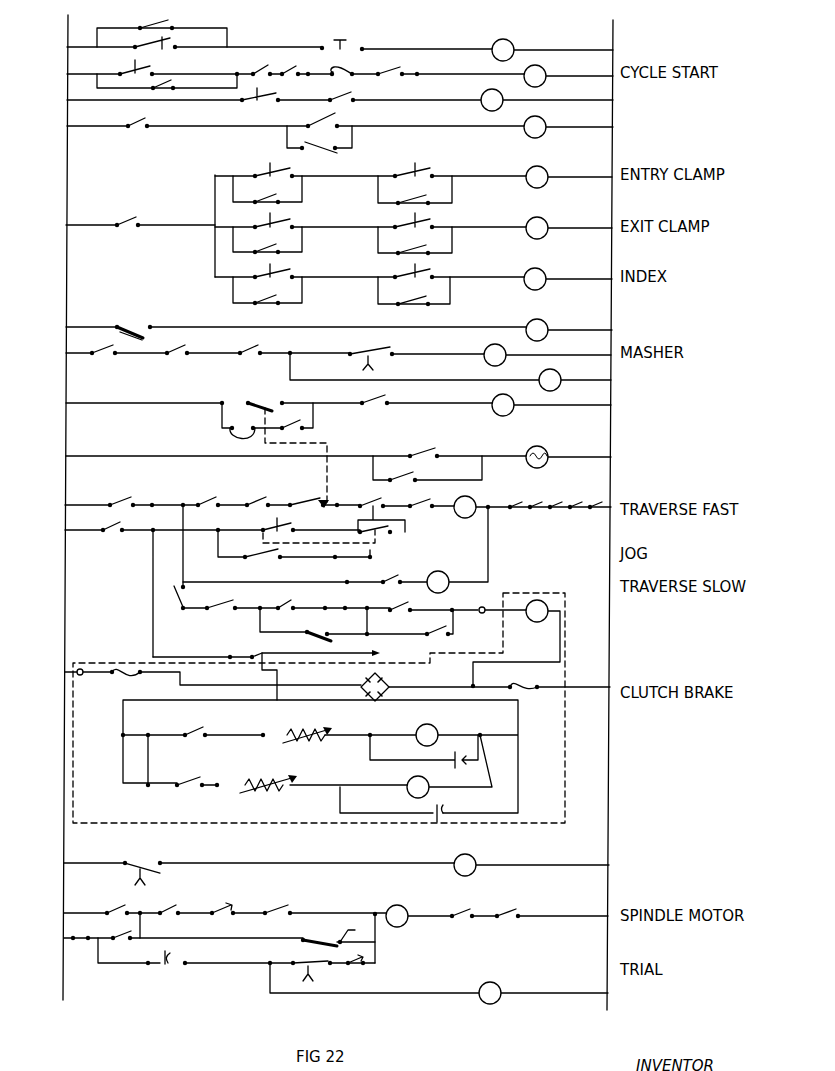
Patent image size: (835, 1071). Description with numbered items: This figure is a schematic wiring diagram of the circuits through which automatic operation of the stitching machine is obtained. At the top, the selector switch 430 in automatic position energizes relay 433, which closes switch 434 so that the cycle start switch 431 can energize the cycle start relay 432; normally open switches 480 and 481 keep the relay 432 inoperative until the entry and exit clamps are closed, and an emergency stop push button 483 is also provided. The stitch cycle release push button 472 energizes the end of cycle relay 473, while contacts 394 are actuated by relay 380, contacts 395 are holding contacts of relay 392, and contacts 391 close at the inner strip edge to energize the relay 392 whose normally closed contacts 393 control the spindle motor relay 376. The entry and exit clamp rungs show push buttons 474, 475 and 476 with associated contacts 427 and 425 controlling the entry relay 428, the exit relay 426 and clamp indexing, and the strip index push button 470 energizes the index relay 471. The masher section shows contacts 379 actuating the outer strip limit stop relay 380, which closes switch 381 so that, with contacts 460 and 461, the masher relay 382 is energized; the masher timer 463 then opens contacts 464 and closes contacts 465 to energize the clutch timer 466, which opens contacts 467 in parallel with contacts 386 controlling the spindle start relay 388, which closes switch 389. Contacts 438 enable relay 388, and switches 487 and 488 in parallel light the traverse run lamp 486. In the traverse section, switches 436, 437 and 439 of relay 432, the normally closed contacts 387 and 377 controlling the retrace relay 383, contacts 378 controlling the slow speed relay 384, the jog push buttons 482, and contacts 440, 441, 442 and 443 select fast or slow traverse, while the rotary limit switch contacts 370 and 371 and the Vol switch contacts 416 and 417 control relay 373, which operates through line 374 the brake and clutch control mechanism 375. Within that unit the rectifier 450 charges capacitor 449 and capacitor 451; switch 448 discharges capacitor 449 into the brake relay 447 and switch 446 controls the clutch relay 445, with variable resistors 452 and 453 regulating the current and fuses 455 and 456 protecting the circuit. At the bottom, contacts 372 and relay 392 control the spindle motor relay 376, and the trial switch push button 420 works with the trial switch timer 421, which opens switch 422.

The rotary cam limit switch contacts 370 is at (227, 608).
The rotary cam limit switch contact 371 is at (320, 638).
The rotary cam limit switch contacts 372 is at (323, 933).
The traverse motor fast speed brake and clutch control relay 373 is at (538, 600).
The line 374 is at (560, 643).
The brake and clutch control mechanism 375 is at (582, 771).
The spindle motor relay 376 is at (408, 910).
The contacts 377 is at (373, 505).
The contacts 378 is at (347, 577).
The contacts 379 is at (138, 325).
The outer strip limit stop relay 380 is at (545, 320).
The switch 381 is at (98, 355).
The masher relay 382 is at (486, 349).
The retrace relay 383 is at (474, 502).
The slow speed traverse motor relay 384 is at (440, 570).
The normally open contacts 386 is at (262, 403).
The normally closed contacts 387 is at (308, 498).
The spindle start relay 388 is at (512, 414).
The switch 389 is at (120, 908).
The normally open contacts 391 is at (343, 143).
The relay 392 is at (542, 134).
The normally closed contacts 393 is at (277, 910).
The normally closed switch contacts 394 is at (140, 125).
The holding contacts 395 is at (330, 118).
The Vol switch contacts 416 is at (278, 607).
The Vol switch contacts 417 is at (327, 607).
The trial switch push button 420 is at (167, 964).
The trial switch timer 421 is at (500, 1004).
The switch 422 is at (325, 973).
The contact 425 is at (433, 223).
The exit relay 426 is at (546, 224).
The contact 427 is at (417, 166).
The entry relay 428 is at (560, 174).
The selector switch 430 is at (157, 34).
The cycle start switch 431 is at (158, 62).
The cycle start relay 432 is at (544, 74).
The relay 433 is at (514, 45).
The switch 434 is at (262, 70).
The switch 436 is at (120, 497).
The switch 437 is at (206, 497).
The switch contacts 438 is at (380, 407).
The switch contacts 439 is at (177, 597).
The normally closed contacts 440 is at (390, 578).
The normally closed contacts 441 is at (410, 508).
The normally open contacts 442 is at (430, 608).
The normally open contacts 443 is at (440, 637).
The clutch relay 445 is at (438, 731).
The switch 446 is at (208, 723).
The brake relay 447 is at (426, 784).
The switch 448 is at (197, 777).
The capacitor 449 is at (447, 808).
The rectifier 450 is at (390, 693).
The capacitor 451 is at (424, 751).
The variable resistor 452 is at (313, 733).
The variable resistor 453 is at (267, 790).
The fuse 455 is at (127, 673).
The fuse 456 is at (520, 688).
The contacts 460 is at (175, 357).
The contacts 461 is at (262, 350).
The masher timer 463 is at (559, 375).
The contacts 464 is at (371, 351).
The switch contacts 465 is at (138, 863).
The clutch timer 466 is at (476, 858).
The switch contacts 467 is at (245, 425).
The strip index push button 470 is at (433, 278).
The index relay 471 is at (545, 277).
The stitch cycle release push button 472 is at (250, 102).
The end of cycle relay 473 is at (502, 98).
The push button 474 is at (266, 176).
The push button 475 is at (282, 223).
The push button 476 is at (280, 278).
The normally open switch 480 is at (330, 73).
The normally open switch 481 is at (385, 72).
The jog push buttons 482 is at (323, 528).
The emergency stop push button 483 is at (345, 42).
The traverse run indicating light 486 is at (547, 464).
The switch 487 is at (427, 450).
The switch 488 is at (417, 480).